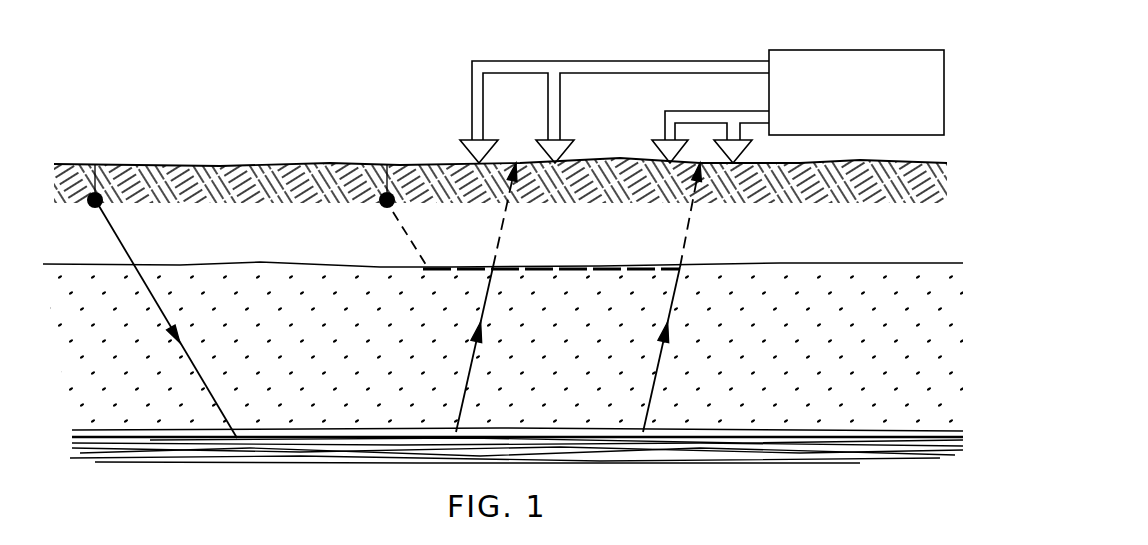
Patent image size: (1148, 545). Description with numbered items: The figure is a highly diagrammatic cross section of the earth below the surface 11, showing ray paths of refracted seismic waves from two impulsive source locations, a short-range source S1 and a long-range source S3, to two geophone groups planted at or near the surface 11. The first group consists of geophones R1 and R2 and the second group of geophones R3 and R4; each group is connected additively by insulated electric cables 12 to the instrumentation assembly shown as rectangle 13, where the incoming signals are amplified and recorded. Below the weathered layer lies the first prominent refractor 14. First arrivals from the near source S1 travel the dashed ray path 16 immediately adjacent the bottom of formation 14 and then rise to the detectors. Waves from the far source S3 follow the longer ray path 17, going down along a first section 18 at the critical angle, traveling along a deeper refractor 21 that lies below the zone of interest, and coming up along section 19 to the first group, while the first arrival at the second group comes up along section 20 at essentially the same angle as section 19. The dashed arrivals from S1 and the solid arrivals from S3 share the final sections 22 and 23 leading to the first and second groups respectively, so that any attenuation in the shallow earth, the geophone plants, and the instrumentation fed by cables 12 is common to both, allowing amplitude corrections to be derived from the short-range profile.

The surface of the earth 11 is at (192, 167).
The insulated electric cables 12 is at (690, 110).
The instrumentation assembly 13 is at (893, 101).
The first prominent refractor 14 is at (862, 227).
The dashed ray path 16 is at (465, 272).
The longer ray path 17 is at (333, 439).
The first section of ray path 18 is at (170, 315).
The up-coming section of ray path 19 is at (472, 372).
The ray path section to second group 20 is at (662, 370).
The deep refractor 21 is at (743, 443).
The ray path section to first group 22 is at (503, 225).
The ray path section to second group 23 is at (688, 225).
The geophone R1 is at (462, 136).
The geophone R2 is at (539, 136).
The geophone R3 is at (649, 145).
The geophone R4 is at (750, 154).
The short-range source location S1 is at (371, 205).
The long-range source location S3 is at (79, 205).